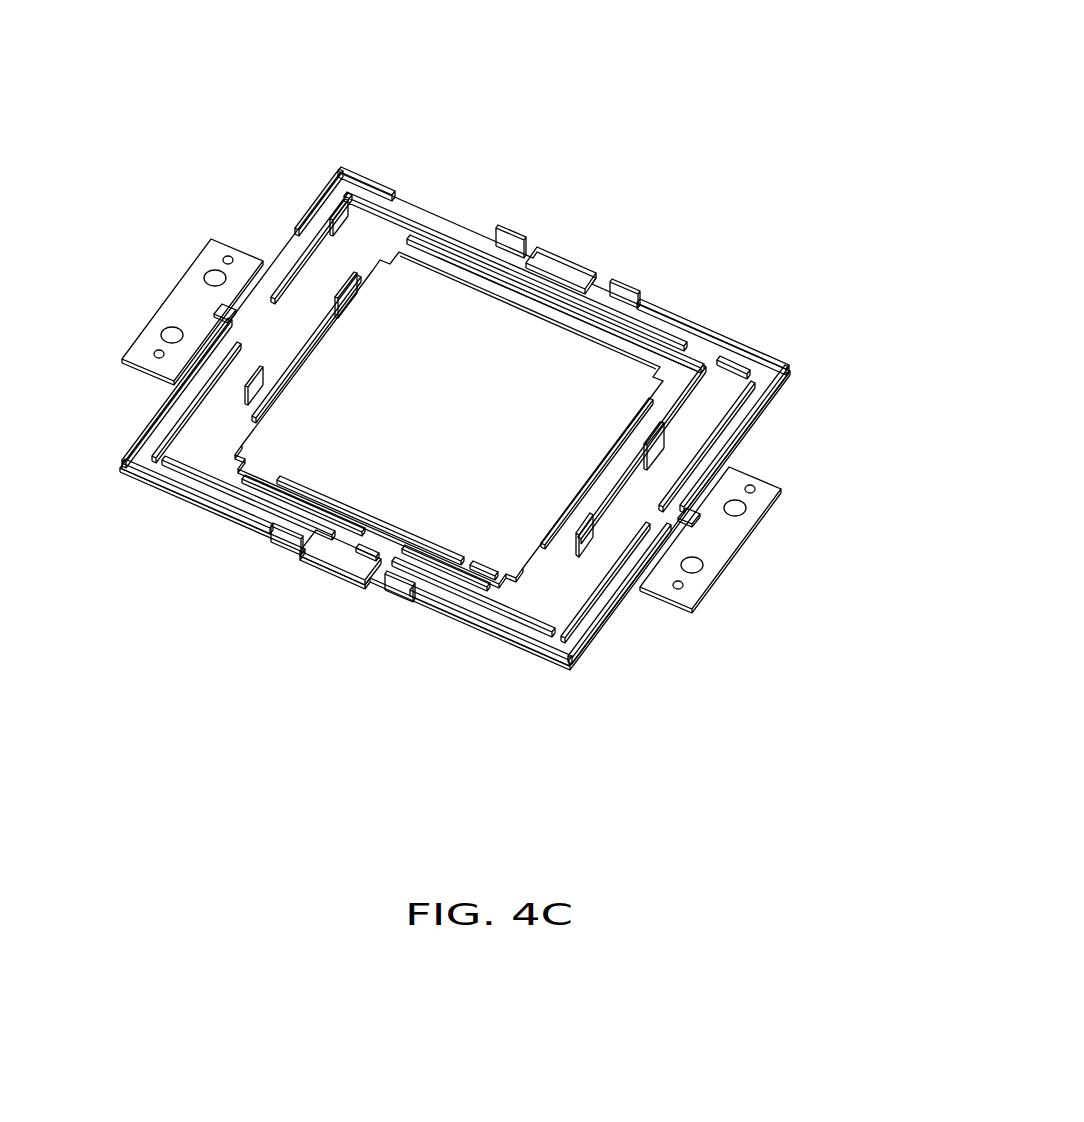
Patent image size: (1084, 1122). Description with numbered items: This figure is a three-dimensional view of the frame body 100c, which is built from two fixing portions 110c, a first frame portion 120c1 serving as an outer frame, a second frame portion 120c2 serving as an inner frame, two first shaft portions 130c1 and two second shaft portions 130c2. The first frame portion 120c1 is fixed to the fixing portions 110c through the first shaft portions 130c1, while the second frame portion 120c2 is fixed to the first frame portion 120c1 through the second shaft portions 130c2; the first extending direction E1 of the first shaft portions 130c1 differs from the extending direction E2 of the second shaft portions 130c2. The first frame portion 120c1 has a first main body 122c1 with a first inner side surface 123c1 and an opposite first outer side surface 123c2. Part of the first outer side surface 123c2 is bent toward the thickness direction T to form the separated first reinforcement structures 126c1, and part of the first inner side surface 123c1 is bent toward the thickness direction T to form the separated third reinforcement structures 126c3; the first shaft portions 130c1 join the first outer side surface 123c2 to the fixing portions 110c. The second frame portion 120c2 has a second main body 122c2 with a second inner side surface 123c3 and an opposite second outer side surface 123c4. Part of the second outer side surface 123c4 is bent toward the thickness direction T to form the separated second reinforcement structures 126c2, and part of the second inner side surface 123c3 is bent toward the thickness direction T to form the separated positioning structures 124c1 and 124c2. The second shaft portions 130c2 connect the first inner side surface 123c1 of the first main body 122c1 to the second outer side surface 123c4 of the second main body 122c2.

The frame body 100c is at (502, 421).
The first frame portion 120c1 is at (537, 402).
The first reinforcement structures 126c1 is at (307, 208).
The first main body 122c1 is at (742, 417).
The third reinforcement structures 126c3 is at (560, 262).
The second frame portion 120c2 is at (529, 307).
The positioning structure 124c2 is at (352, 300).
The second reinforcement structures 126c2 is at (408, 262).
The second main body 122c2 is at (465, 265).
The positioning structure 124c1 is at (467, 356).
The first inner side surface 123c1 is at (556, 634).
The first outer side surface 123c2 is at (622, 602).
The second inner side surface 123c3 is at (478, 578).
The second outer side surface 123c4 is at (365, 556).
The second shaft portions 130c2 is at (590, 297).
The first shaft portions 130c1 is at (222, 312).
The fixing portions 110c is at (180, 300).
The first extending direction E1 is at (560, 468).
The extending direction E2 is at (490, 372).
The thickness direction T is at (310, 162).